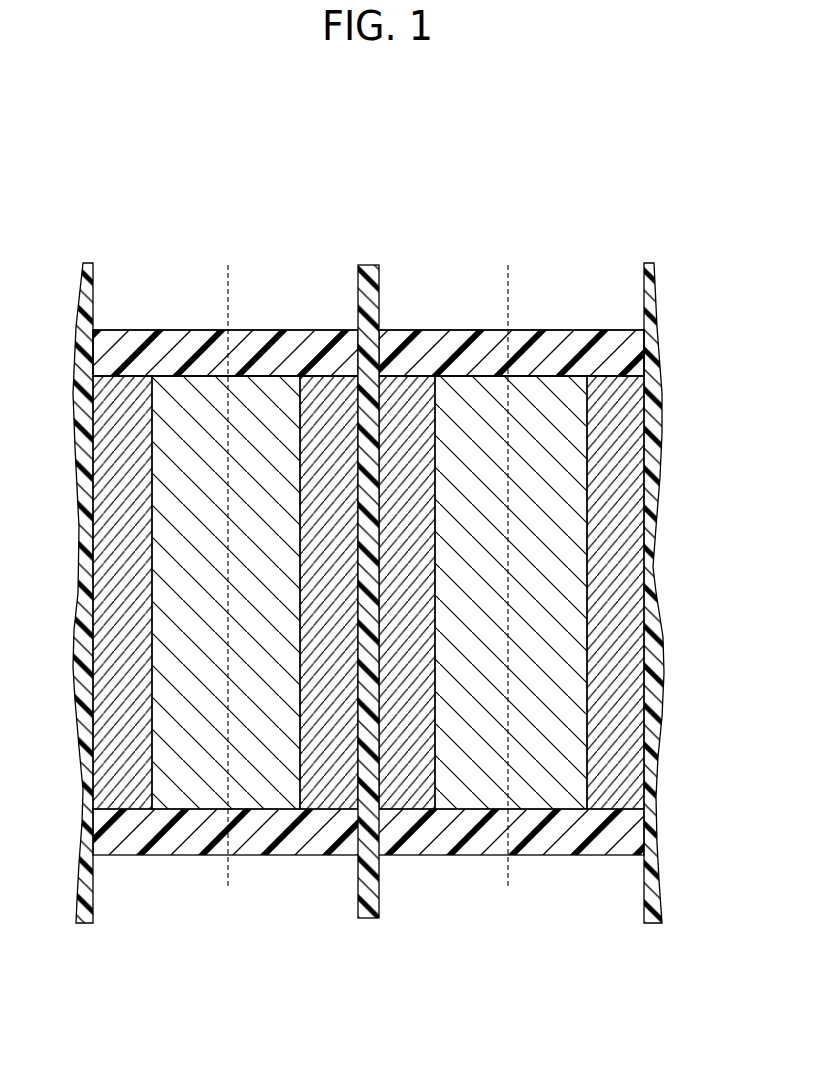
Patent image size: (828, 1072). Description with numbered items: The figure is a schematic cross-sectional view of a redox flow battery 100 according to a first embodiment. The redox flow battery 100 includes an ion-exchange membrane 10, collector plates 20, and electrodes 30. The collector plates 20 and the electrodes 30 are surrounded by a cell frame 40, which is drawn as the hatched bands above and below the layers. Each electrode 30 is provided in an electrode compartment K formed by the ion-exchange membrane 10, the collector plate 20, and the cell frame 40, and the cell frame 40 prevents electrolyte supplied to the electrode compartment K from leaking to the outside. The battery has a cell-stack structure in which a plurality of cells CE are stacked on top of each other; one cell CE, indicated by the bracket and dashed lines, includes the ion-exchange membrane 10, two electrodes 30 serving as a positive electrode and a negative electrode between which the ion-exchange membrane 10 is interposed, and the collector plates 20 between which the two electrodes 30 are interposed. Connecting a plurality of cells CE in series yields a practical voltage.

The redox flow battery 100 is at (603, 190).
The ion-exchange membrane 10 is at (370, 905).
The collector plate 20 is at (193, 787).
The electrode 30 is at (330, 787).
The cell frame 40 is at (172, 330).
The electrode compartment K is at (335, 380).
The cell CE is at (508, 243).